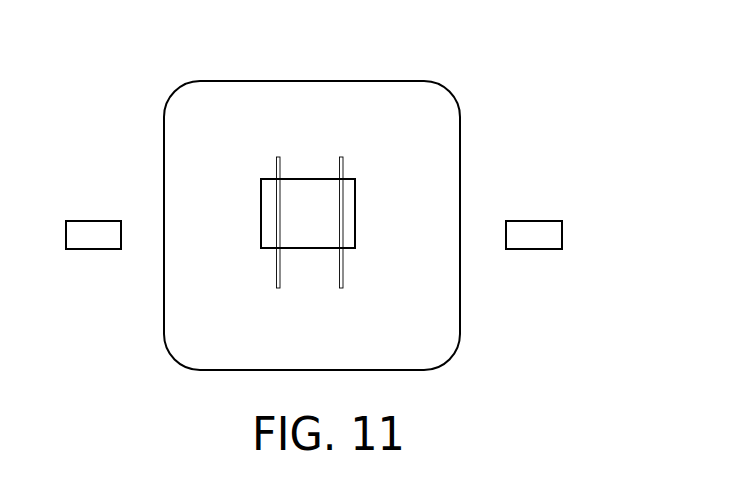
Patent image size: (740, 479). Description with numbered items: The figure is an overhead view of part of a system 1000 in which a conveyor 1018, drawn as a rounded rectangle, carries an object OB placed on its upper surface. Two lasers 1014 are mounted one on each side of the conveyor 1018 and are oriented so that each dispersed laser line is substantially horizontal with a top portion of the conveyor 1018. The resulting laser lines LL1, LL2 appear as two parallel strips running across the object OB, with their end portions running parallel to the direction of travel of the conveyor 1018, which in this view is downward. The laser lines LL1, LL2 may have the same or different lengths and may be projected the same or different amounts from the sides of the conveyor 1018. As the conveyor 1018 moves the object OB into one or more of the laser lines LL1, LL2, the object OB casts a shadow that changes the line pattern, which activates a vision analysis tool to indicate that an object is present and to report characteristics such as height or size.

The system 1000 is at (521, 76).
The conveyor 1018 is at (184, 111).
The lasers 1014 is at (88, 219).
The object OB is at (261, 240).
The laser line LL1 is at (278, 157).
The laser line LL2 is at (342, 157).